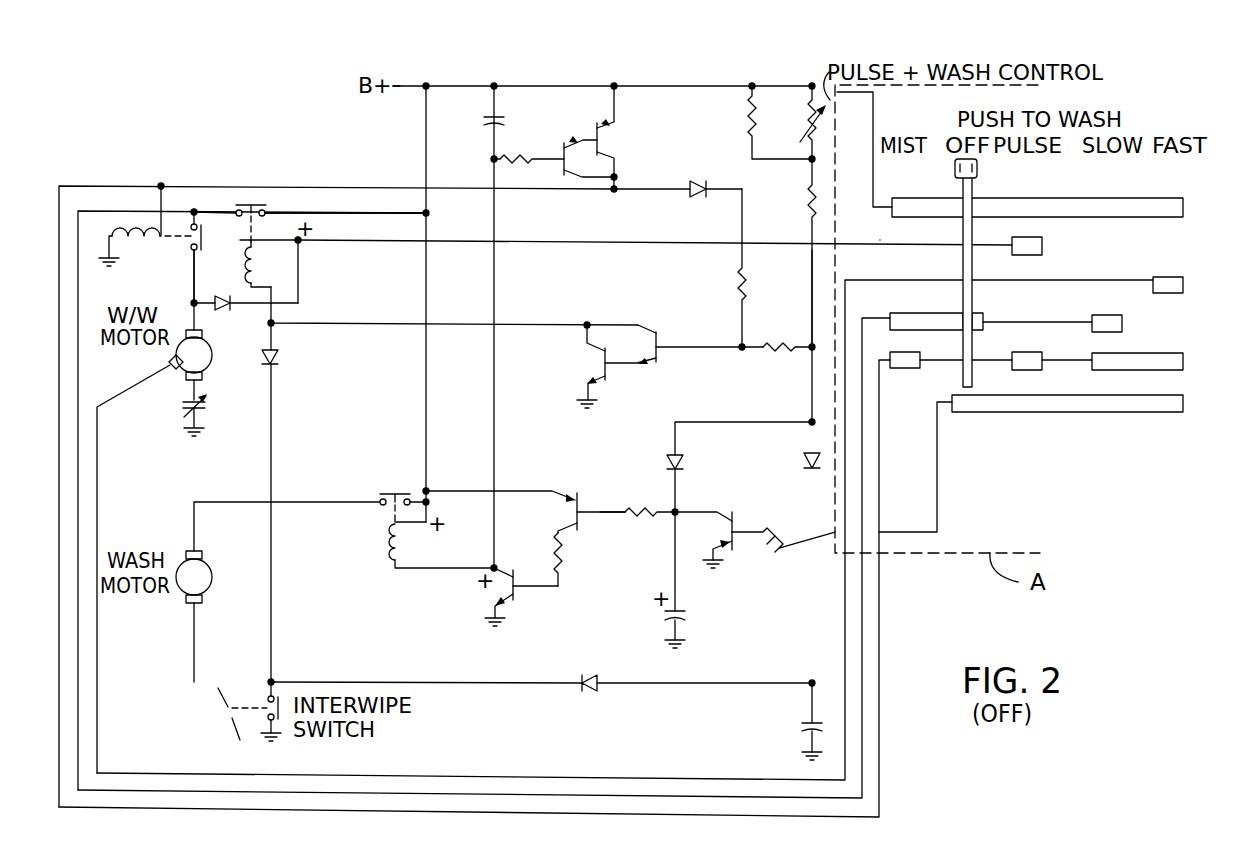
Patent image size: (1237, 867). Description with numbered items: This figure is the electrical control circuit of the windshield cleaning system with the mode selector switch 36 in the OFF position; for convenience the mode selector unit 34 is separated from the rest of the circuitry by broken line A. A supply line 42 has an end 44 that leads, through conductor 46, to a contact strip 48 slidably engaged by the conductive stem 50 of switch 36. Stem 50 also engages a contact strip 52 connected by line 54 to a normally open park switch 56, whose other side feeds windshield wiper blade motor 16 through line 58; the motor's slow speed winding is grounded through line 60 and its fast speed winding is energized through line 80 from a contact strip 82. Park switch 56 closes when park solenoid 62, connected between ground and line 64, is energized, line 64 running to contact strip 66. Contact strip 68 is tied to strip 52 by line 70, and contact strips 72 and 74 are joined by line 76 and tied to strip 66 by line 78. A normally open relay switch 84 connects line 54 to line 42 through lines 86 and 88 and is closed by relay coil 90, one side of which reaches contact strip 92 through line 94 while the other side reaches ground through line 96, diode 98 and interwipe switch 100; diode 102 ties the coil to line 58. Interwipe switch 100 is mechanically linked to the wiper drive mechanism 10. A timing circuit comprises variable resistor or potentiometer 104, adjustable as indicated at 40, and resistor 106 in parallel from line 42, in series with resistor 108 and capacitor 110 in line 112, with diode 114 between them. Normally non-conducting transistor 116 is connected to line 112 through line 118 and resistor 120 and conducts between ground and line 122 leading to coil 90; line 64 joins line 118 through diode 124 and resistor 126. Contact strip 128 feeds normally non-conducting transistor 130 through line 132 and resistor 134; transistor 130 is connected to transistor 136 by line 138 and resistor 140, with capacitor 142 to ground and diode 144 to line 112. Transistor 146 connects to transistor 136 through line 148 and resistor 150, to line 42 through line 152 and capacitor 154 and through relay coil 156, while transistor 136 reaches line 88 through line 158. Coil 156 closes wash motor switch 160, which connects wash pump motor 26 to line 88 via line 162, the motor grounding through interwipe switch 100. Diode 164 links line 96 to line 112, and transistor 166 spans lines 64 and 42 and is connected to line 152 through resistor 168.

The windshield wiper blades drive mechanism 10 is at (230, 728).
The windshield wiper blade motor 16 is at (208, 360).
The wash fluid pump motor 26 is at (213, 575).
The mode selector unit 34 is at (1142, 126).
The mode selector switch 36 is at (978, 170).
The variable resistor 40 is at (812, 120).
The line 42 is at (568, 86).
The end of line 42 44 is at (398, 88).
The conductor 46 is at (870, 192).
The contact strip 48 is at (1185, 210).
The conductive stem 50 is at (962, 265).
The contact strip 52 is at (928, 318).
The line 54 is at (178, 208).
The park switch 56 is at (210, 228).
The line 58 is at (192, 280).
The line 60 is at (184, 404).
The park solenoid 62 is at (135, 232).
The line 64 is at (86, 182).
The contact strip 66 is at (900, 370).
The contact strip 68 is at (1124, 324).
The line 70 is at (1030, 320).
The contact strip 72 is at (1030, 365).
The contact strip 74 is at (1165, 370).
The line 76 is at (1078, 358).
The line 78 is at (955, 362).
The line 80 is at (128, 388).
The contact strip 82 is at (1170, 280).
The relay actuated switch 84 is at (258, 200).
The line 86 is at (343, 208).
The line 88 is at (428, 152).
The relay coil 90 is at (270, 270).
The contact strip 92 is at (1044, 246).
The line 94 is at (550, 242).
The line 96 is at (273, 440).
The diode 98 is at (283, 356).
The interwipe switch 100 is at (282, 700).
The diode 102 is at (222, 312).
The potentiometer 104 is at (812, 135).
The resistor 106 is at (748, 124).
The resistor 108 is at (805, 206).
The capacitor 110 is at (800, 728).
The line 112 is at (810, 303).
The diode 114 is at (800, 460).
The transistor 116 is at (627, 322).
The line 118 is at (700, 350).
The resistor 120 is at (782, 352).
The line 122 is at (383, 320).
The diode 124 is at (698, 198).
The resistor 126 is at (738, 282).
The contact strip 128 is at (1082, 405).
The transistor 130 is at (737, 553).
The line 132 is at (937, 500).
The resistor 134 is at (782, 525).
The transistor 136 is at (565, 484).
The line 138 is at (605, 510).
The resistor 140 is at (638, 516).
The capacitor 142 is at (688, 614).
The diode 144 is at (668, 457).
The transistor 146 is at (518, 610).
The line 148 is at (556, 590).
The resistor 150 is at (566, 560).
The line 152 is at (496, 415).
The capacitor 154 is at (506, 122).
The relay coil 156 is at (386, 560).
The line 158 is at (460, 488).
The wash motor switch 160 is at (386, 490).
The line 162 is at (245, 498).
The diode 164 is at (590, 690).
The transistor 166 is at (620, 140).
The resistor 168 is at (526, 163).